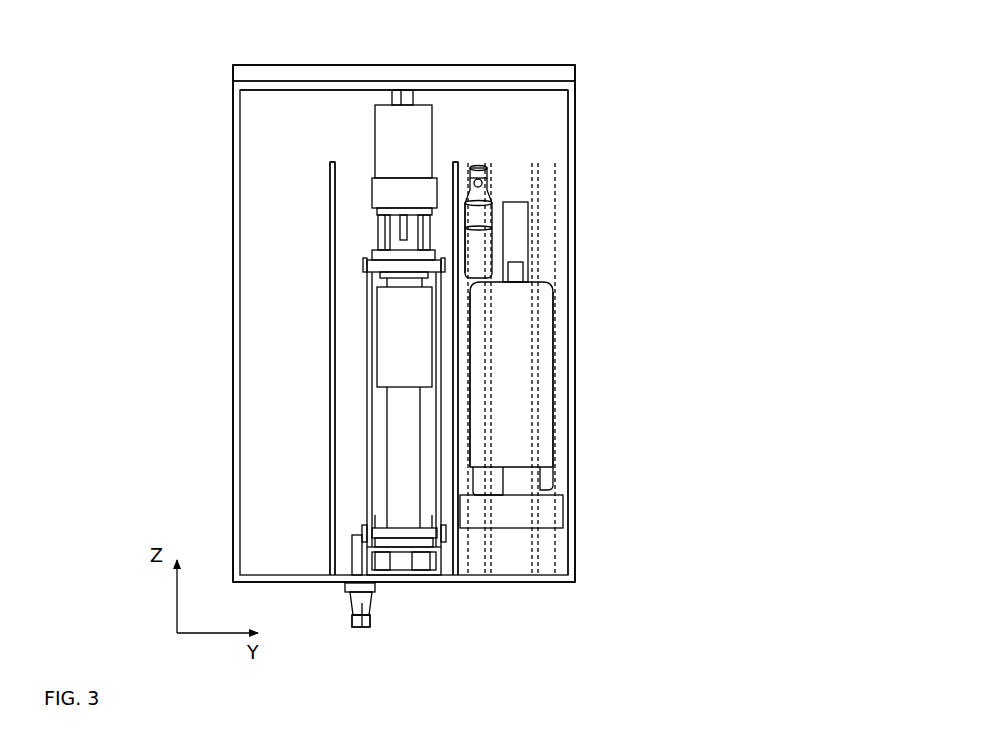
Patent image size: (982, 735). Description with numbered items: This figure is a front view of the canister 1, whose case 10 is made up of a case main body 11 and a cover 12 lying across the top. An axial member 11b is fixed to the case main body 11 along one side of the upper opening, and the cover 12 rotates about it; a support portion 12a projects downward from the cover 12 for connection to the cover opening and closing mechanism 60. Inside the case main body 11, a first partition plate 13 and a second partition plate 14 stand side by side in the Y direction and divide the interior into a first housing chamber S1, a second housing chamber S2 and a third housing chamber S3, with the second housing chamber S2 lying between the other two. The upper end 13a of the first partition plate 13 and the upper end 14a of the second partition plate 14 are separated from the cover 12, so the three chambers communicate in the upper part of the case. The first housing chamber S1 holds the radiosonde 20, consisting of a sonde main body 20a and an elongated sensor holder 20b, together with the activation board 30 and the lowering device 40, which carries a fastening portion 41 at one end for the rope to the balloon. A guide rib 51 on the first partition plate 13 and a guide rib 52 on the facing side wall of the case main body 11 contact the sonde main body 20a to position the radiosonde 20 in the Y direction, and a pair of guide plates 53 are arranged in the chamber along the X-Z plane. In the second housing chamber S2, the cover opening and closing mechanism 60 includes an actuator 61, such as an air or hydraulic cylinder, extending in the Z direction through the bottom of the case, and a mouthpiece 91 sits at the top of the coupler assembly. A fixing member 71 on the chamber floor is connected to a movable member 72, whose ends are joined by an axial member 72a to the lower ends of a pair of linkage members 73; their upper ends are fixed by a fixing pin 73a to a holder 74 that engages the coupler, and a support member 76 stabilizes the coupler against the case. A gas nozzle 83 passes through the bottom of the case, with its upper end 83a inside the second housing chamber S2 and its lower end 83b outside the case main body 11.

The canister 1 is at (586, 58).
The case 10 is at (404, 323).
The case main body 11 is at (240, 209).
The axial member 11b is at (409, 78).
The cover 12 is at (293, 90).
The support portion 12a is at (397, 99).
The first partition plate 13 is at (457, 573).
The upper end 13a is at (455, 162).
The second partition plate 14 is at (333, 490).
The upper end 14a is at (330, 161).
The radiosonde 20 is at (561, 334).
The sonde main body 20a is at (512, 377).
The sensor holder 20b is at (515, 232).
The activation board 30 is at (515, 510).
The lowering device 40 is at (482, 252).
The fastening portion 41 is at (476, 166).
The guide rib 51 is at (468, 162).
The guide rib 52 is at (560, 162).
The guide plates 53 is at (533, 572).
The cover opening and closing mechanism 60 is at (380, 416).
The actuator 61 is at (380, 230).
The fixing member 71 is at (446, 572).
The movable member 72 is at (411, 540).
The axial member 72a is at (396, 547).
The linkage members 73 is at (438, 475).
The fixing pin 73a is at (378, 278).
The holder 74 is at (375, 252).
The support member 76 is at (400, 326).
The gas nozzle 83 is at (341, 598).
The upper end 83a is at (355, 563).
The lower end 83b is at (362, 610).
The mouthpiece 91 is at (388, 122).
The first housing chamber S1 is at (531, 162).
The second housing chamber S2 is at (348, 389).
The third housing chamber S3 is at (276, 262).